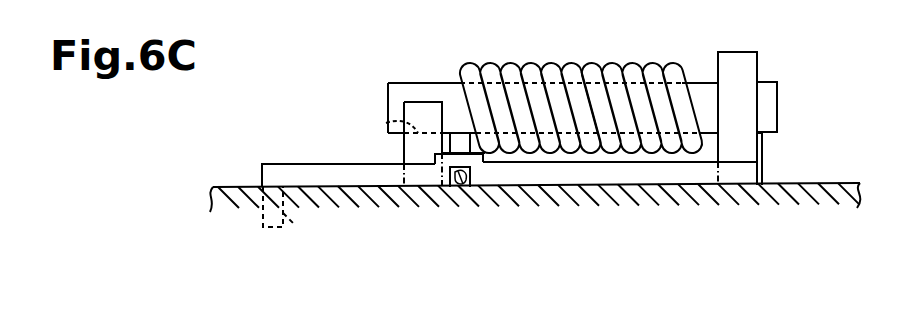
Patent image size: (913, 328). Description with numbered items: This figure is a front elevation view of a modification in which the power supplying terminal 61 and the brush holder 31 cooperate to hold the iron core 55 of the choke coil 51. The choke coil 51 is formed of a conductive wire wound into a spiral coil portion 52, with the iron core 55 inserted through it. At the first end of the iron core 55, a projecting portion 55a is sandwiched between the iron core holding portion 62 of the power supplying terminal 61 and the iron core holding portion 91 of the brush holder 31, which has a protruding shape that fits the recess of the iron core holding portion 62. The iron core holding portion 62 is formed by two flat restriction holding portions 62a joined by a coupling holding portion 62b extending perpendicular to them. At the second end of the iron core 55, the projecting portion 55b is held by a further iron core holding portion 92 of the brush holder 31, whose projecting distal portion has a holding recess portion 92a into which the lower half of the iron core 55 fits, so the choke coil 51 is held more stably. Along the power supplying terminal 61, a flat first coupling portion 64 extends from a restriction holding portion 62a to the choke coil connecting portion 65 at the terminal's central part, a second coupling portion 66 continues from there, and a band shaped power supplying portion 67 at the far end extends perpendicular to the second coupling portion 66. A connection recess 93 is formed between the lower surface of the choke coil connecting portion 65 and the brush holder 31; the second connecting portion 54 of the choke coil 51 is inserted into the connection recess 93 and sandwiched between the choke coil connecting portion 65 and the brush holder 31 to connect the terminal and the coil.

The brush holder 31 is at (850, 183).
The choke coil 51 is at (487, 63).
The coil portion 52 is at (566, 63).
The second connecting portion 54 is at (458, 184).
The iron core 55 is at (445, 85).
The projecting portion 55a is at (778, 90).
The projecting portion 55b is at (388, 90).
The power supplying terminal 61 is at (637, 153).
The iron core holding portion 62 is at (758, 58).
The restriction holding portion 62a is at (753, 148).
The coupling holding portion 62b is at (737, 58).
The first coupling portion 64 is at (684, 172).
The choke coil connecting portion 65 is at (476, 161).
The second coupling portion 66 is at (373, 178).
The power supplying portion 67 is at (293, 223).
The iron core holding portion 91 is at (762, 162).
The iron core holding portion 92 is at (404, 145).
The holding recess portion 92a is at (388, 122).
The connection recess 93 is at (453, 178).